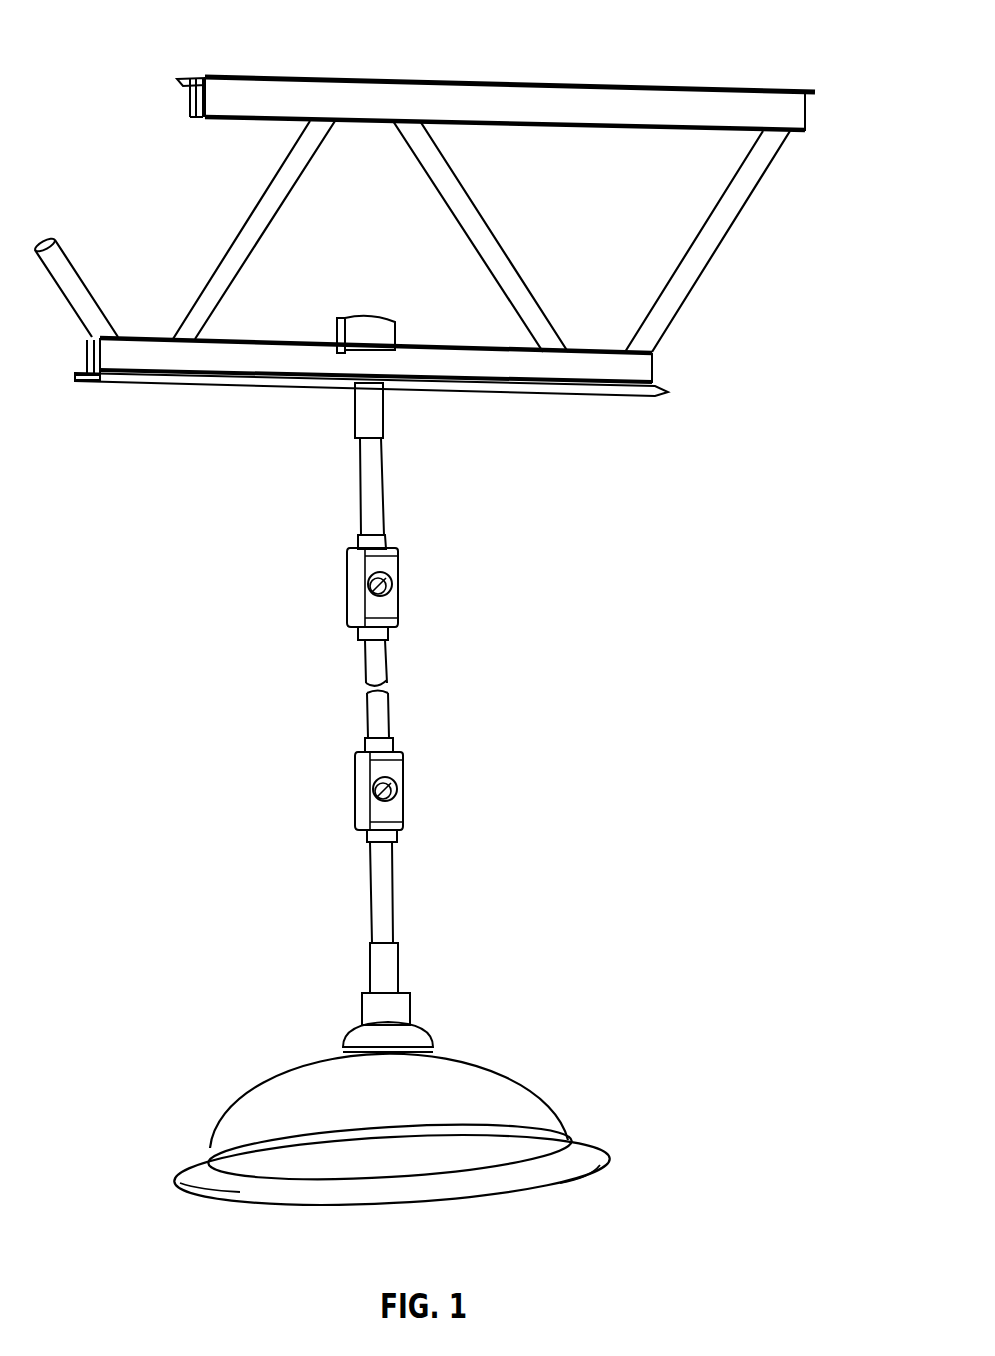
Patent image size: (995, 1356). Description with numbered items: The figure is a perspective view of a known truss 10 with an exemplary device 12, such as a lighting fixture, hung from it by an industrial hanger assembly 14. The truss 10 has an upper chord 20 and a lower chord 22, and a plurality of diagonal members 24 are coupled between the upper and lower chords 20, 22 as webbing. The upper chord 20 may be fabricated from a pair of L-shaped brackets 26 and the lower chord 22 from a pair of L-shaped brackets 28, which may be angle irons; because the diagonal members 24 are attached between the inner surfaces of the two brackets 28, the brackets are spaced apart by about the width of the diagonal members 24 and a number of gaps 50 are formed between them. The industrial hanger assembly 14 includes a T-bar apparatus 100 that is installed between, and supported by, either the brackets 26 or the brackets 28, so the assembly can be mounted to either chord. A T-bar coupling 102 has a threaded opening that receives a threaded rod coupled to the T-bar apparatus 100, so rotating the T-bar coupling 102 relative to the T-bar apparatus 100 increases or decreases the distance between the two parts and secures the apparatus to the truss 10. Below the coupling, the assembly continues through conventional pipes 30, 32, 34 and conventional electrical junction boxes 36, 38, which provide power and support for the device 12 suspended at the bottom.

The truss 10 is at (748, 262).
The device 12 is at (480, 1063).
The industrial hanger assembly 14 is at (505, 660).
The upper chord 20 is at (808, 112).
The lower chord 22 is at (652, 370).
The diagonal members 24 is at (293, 192).
The L-shaped brackets 26 is at (192, 78).
The L-shaped brackets 28 is at (85, 385).
The pipe 30 is at (383, 495).
The pipe 32 is at (390, 712).
The pipe 34 is at (395, 884).
The electrical junction box 36 is at (398, 563).
The electrical junction box 38 is at (405, 769).
The gaps 50 is at (213, 376).
The T-bar apparatus 100 is at (371, 318).
The T-bar coupling 102 is at (352, 425).